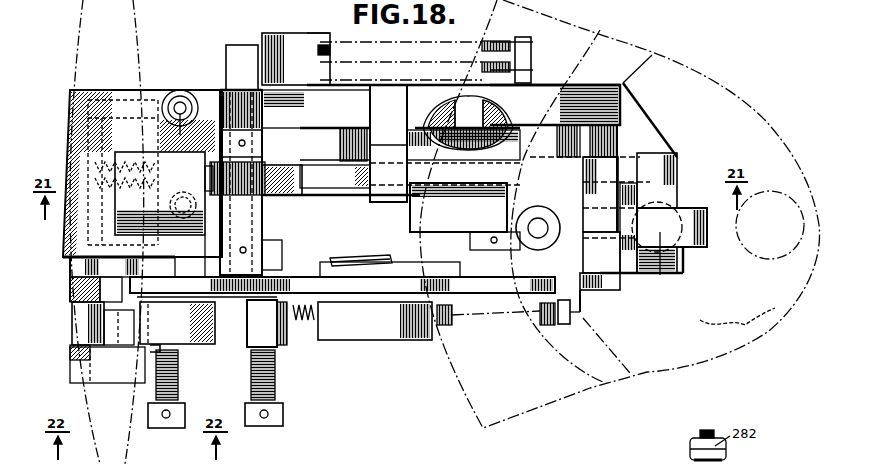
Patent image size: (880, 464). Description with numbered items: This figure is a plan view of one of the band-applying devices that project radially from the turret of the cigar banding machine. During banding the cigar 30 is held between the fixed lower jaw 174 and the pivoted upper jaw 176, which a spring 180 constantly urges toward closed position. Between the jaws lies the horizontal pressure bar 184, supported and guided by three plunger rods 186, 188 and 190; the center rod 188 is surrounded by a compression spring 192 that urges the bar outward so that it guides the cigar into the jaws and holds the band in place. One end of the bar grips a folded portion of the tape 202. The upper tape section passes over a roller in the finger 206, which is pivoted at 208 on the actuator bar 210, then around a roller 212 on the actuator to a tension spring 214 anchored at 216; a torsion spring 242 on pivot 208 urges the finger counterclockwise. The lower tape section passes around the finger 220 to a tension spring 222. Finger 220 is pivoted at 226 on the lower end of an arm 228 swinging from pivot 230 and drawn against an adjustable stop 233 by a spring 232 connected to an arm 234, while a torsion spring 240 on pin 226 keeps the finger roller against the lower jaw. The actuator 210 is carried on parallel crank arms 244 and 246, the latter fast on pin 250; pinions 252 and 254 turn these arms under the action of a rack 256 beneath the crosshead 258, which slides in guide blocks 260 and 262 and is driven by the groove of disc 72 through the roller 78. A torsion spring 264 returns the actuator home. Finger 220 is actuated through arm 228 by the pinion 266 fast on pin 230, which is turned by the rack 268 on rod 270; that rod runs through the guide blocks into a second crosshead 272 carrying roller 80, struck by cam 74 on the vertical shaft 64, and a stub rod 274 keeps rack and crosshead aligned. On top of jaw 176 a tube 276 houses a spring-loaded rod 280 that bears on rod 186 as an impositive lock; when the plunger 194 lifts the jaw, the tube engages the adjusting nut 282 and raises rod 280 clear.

The cigar 30 is at (72, 55).
The disc 72 is at (728, 12).
The vertical shaft 64 is at (762, 258).
The cam 74 is at (700, 320).
The roller 78 is at (548, 208).
The roller 80 is at (665, 278).
The lower jaw 174 is at (64, 256).
The upper jaw 176 is at (78, 236).
The spring 180 is at (531, 65).
The pressure bar 184 is at (75, 282).
The plunger rod 186 is at (96, 100).
The plunger rod 188 is at (122, 190).
The plunger rod 190 is at (98, 262).
The compression spring 192 is at (146, 189).
The plunger 194 is at (178, 195).
The tape 202 is at (82, 314).
The finger 206 is at (114, 350).
The pivot 208 is at (172, 429).
The actuator bar 210 is at (288, 282).
The roller 212 is at (133, 340).
The tension spring 214 is at (530, 328).
The anchor 216 is at (568, 328).
The finger 220 is at (230, 342).
The tension spring 222 is at (330, 342).
The pivot 226 is at (270, 427).
The arm 228 is at (276, 258).
The pivot 230 is at (232, 46).
The spring 232 is at (480, 42).
The adjustable stop 233 is at (262, 40).
The arm 234 is at (226, 62).
The torsion spring 240 is at (276, 386).
The torsion spring 242 is at (180, 390).
The crank arm 244 is at (352, 262).
The crank arm 246 is at (495, 256).
The pin 250 is at (500, 118).
The pinion 252 is at (348, 128).
The pinion 254 is at (485, 120).
The rack 256 is at (362, 126).
The crosshead 258 is at (500, 210).
The guide block 260 is at (388, 135).
The guide block 262 is at (600, 310).
The torsion spring 264 is at (330, 258).
The pinion 266 is at (268, 172).
The rack 268 is at (320, 197).
The rod 270 is at (626, 162).
The crosshead 272 is at (672, 157).
The stub rod 274 is at (618, 290).
The tube 276 is at (183, 92).
The rod 280 is at (180, 130).
The adjusting nut 282 is at (172, 98).